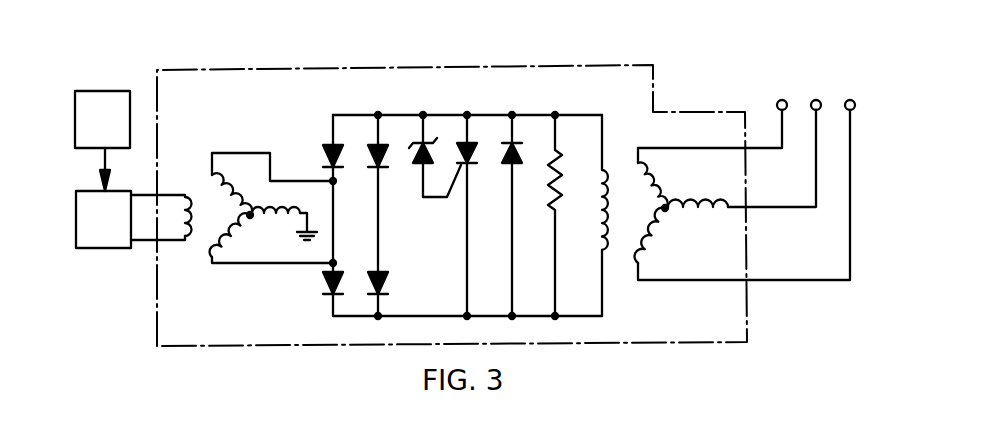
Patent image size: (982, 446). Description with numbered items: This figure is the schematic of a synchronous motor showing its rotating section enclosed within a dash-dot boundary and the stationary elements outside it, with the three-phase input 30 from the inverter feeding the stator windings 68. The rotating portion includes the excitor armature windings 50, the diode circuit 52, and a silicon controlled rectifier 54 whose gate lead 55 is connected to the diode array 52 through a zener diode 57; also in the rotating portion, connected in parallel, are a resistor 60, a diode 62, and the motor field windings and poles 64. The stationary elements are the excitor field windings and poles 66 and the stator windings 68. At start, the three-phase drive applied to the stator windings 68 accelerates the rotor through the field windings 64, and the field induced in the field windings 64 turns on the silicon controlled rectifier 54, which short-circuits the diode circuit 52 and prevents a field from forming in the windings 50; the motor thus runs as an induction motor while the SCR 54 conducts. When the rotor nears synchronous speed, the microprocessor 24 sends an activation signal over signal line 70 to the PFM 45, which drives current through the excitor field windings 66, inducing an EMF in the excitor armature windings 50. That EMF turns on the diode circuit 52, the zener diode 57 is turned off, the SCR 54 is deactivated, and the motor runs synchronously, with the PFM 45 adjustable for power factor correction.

The microprocessor 24 is at (113, 91).
The signal line 70 is at (105, 153).
The PFM 45 is at (98, 248).
The excitor field windings and poles 66 is at (186, 243).
The excitor armature windings 50 is at (232, 183).
The diode circuit 52 is at (330, 109).
The zener diode 57 is at (418, 163).
The gate lead 55 is at (431, 198).
The silicon controlled rectifier 54 is at (470, 168).
The diode 62 is at (515, 166).
The resistor 60 is at (551, 200).
The motor field windings and poles 64 is at (601, 203).
The stator windings 68 is at (655, 232).
The inverter input 30 is at (857, 97).